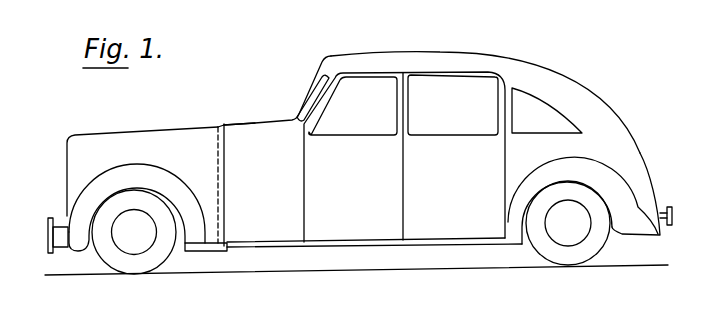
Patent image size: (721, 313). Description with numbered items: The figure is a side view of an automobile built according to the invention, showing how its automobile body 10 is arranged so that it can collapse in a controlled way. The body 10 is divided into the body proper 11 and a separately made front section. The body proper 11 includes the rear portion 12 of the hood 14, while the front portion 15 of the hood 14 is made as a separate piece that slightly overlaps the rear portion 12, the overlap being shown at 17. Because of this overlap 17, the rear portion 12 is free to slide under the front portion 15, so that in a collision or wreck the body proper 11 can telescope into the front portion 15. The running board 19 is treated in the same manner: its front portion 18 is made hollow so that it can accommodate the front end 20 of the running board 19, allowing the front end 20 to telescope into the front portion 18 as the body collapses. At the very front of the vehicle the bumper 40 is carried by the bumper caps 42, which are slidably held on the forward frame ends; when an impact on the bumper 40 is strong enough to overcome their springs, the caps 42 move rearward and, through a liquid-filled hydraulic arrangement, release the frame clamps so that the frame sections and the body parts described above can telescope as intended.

The automobile body 10 is at (551, 67).
The body proper 11 is at (452, 58).
The rear portion of the hood 12 is at (255, 125).
The hood 14 is at (195, 122).
The front portion of the hood 15 is at (108, 138).
The overlap 17 is at (224, 124).
The front portion of the running board 18 is at (212, 251).
The running board 19 is at (427, 243).
The front end of the running board 20 is at (233, 249).
The bumper 40 is at (52, 241).
The bumper caps 42 is at (57, 232).